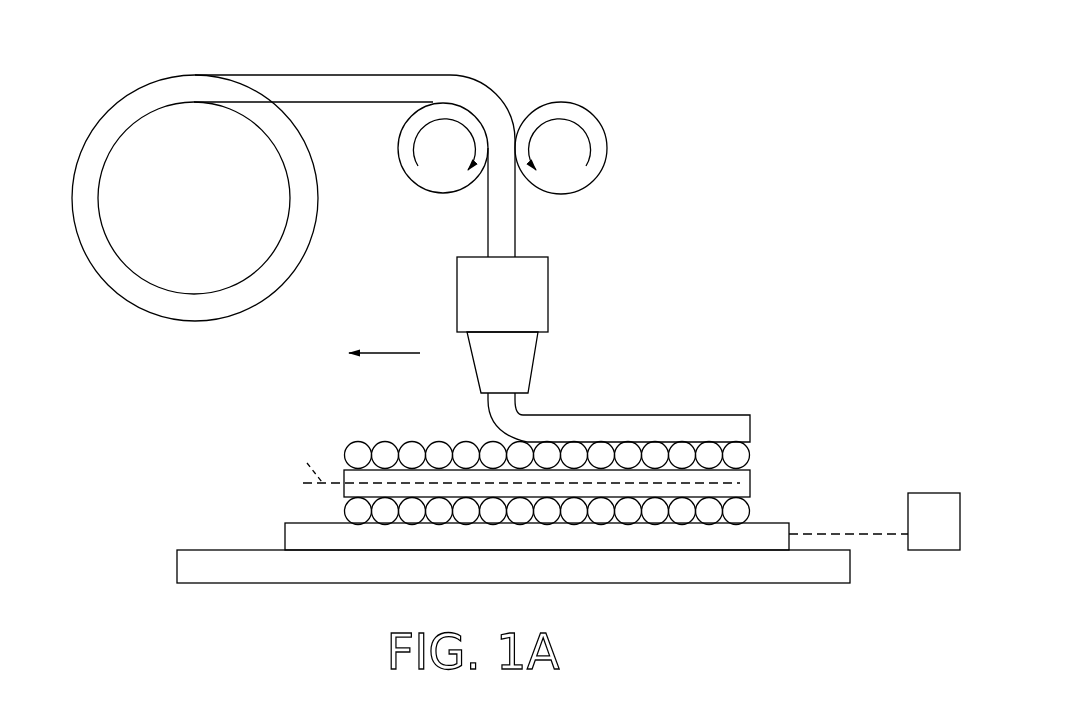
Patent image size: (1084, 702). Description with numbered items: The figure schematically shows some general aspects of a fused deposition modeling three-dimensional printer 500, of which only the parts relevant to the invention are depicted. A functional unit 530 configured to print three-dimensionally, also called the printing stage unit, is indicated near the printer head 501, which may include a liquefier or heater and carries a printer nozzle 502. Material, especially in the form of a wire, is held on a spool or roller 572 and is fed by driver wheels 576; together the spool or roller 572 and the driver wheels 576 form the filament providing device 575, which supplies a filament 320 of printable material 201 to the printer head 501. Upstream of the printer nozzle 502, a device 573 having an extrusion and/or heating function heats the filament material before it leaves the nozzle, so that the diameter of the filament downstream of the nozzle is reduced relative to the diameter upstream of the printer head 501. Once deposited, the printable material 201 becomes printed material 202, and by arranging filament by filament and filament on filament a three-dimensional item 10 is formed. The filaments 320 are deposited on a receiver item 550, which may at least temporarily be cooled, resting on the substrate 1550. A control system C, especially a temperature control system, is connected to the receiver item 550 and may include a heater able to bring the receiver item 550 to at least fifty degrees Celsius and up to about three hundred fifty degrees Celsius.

The 3D printer 500 is at (771, 256).
The spool or roller 572 is at (152, 77).
The driver wheels 576 is at (503, 77).
The extrusion and/or heating device 573 is at (599, 218).
The filament providing device 575 is at (618, 102).
The printer head 501 is at (528, 300).
The printer nozzle 502 is at (477, 401).
The functional unit configured to 3D print 530 is at (201, 382).
The 3D item 10 is at (597, 446).
The printable material 201 is at (521, 411).
The printed material 202 is at (712, 428).
The filament 320 is at (725, 484).
The receiver item 550 is at (271, 536).
The substrate 1550 is at (262, 496).
The control system C is at (924, 535).